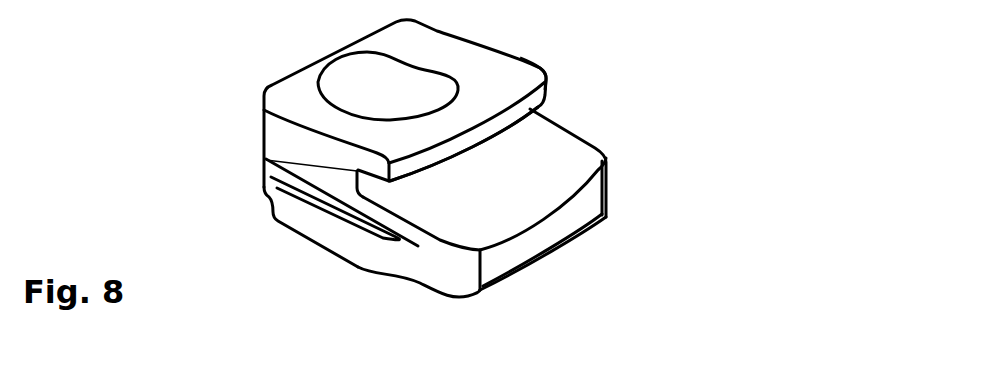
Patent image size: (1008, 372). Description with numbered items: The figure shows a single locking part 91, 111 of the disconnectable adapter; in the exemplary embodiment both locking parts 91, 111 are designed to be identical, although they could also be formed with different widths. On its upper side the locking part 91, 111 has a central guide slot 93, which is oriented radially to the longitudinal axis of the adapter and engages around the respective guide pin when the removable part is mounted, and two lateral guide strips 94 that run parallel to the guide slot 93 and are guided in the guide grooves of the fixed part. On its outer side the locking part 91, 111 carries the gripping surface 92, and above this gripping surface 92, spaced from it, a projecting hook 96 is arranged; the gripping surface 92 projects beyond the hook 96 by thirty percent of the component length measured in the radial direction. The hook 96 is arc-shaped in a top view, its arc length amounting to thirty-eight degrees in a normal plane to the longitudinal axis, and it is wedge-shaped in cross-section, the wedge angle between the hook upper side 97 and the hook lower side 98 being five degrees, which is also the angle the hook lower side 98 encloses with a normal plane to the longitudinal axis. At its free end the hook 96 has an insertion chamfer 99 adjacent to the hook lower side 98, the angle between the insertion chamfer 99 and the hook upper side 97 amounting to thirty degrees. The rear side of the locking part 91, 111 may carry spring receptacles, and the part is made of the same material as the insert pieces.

The locking part 91 is at (288, 133).
The locking part 111 is at (236, 109).
The gripping surface 92 is at (560, 223).
The guide slot 93 is at (352, 79).
The guide strips 94 is at (305, 223).
The hook 96 is at (497, 122).
The hook upper side 97 is at (530, 81).
The hook lower side 98 is at (263, 158).
The insertion chamfer 99 is at (360, 173).